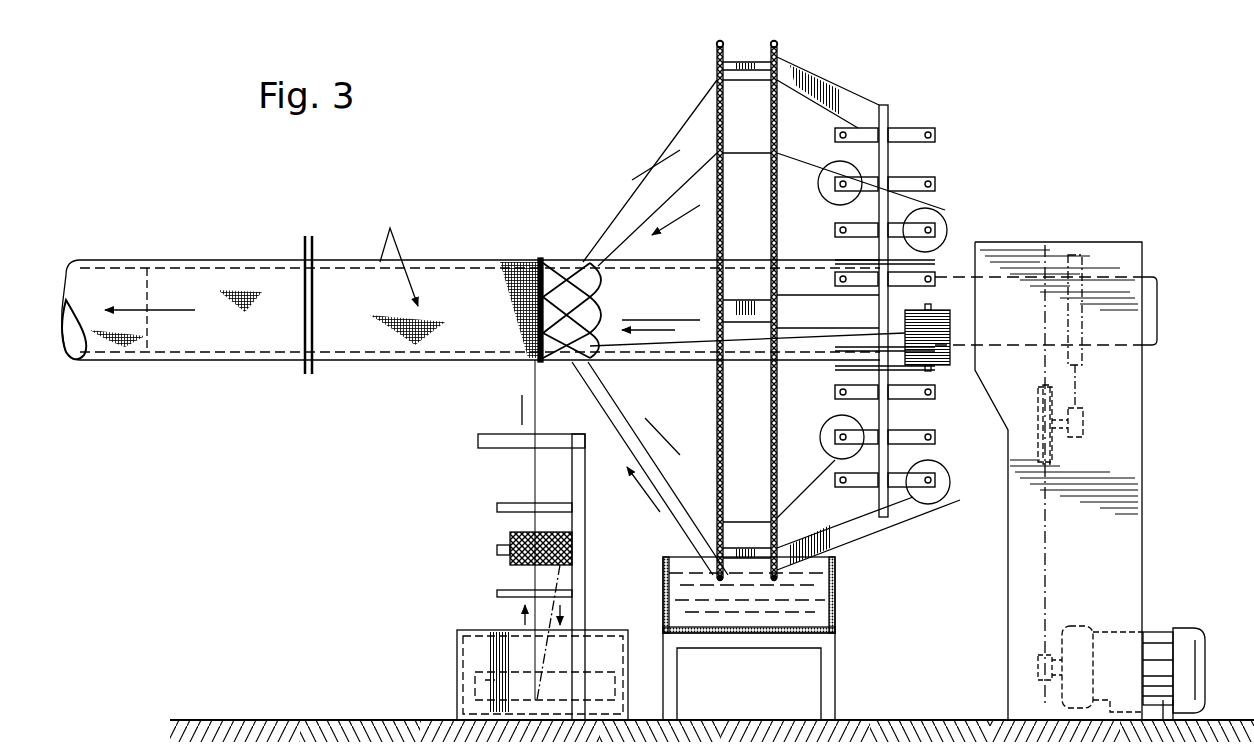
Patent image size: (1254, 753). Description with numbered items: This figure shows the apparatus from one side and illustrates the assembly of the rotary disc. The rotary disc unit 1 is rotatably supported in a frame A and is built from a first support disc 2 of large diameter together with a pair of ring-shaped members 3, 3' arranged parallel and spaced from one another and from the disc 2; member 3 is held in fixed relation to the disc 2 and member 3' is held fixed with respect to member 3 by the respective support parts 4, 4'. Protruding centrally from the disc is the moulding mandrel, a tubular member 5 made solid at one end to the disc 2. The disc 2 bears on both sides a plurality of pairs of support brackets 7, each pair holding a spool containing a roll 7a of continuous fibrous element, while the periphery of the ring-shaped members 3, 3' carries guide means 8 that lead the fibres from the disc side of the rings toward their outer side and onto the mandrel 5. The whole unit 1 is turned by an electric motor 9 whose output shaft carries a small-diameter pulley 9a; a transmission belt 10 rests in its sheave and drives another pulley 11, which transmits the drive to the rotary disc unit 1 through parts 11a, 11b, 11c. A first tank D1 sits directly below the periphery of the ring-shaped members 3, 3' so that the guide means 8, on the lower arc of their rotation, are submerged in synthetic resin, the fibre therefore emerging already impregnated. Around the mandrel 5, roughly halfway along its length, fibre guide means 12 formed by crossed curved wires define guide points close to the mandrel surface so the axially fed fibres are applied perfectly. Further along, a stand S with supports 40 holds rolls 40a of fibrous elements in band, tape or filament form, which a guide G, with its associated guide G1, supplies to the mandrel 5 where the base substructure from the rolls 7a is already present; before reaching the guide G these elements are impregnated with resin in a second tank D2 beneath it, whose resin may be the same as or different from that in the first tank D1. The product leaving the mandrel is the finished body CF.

The rotary disc unit 1 is at (645, 85).
The first support disc 2 is at (889, 108).
The ring-shaped member 3 is at (754, 311).
The ring-shaped member 3' is at (697, 311).
The support part 4 is at (766, 316).
The support part 4' is at (747, 286).
The tubular member 5 is at (176, 358).
The support brackets 7 is at (925, 140).
The rolls 7a is at (840, 165).
The guide means 8 is at (717, 44).
The electric motor 9 is at (1150, 640).
The small-diameter pulley 9a is at (1038, 660).
The transmission belt 10 is at (1047, 580).
The pulley 11 is at (1038, 398).
The gear element 11a is at (1083, 435).
The gear shaft 11b is at (1078, 380).
The gear 11c is at (1075, 255).
The fibre guide means 12 is at (530, 332).
The supports 40 is at (497, 552).
The rolls 40a is at (510, 545).
The frame A is at (1143, 428).
The finished body CF is at (85, 272).
The first tank D1 is at (667, 588).
The second tank D2 is at (470, 660).
The guide G is at (505, 438).
The guide G1 is at (490, 680).
The stand S is at (586, 505).